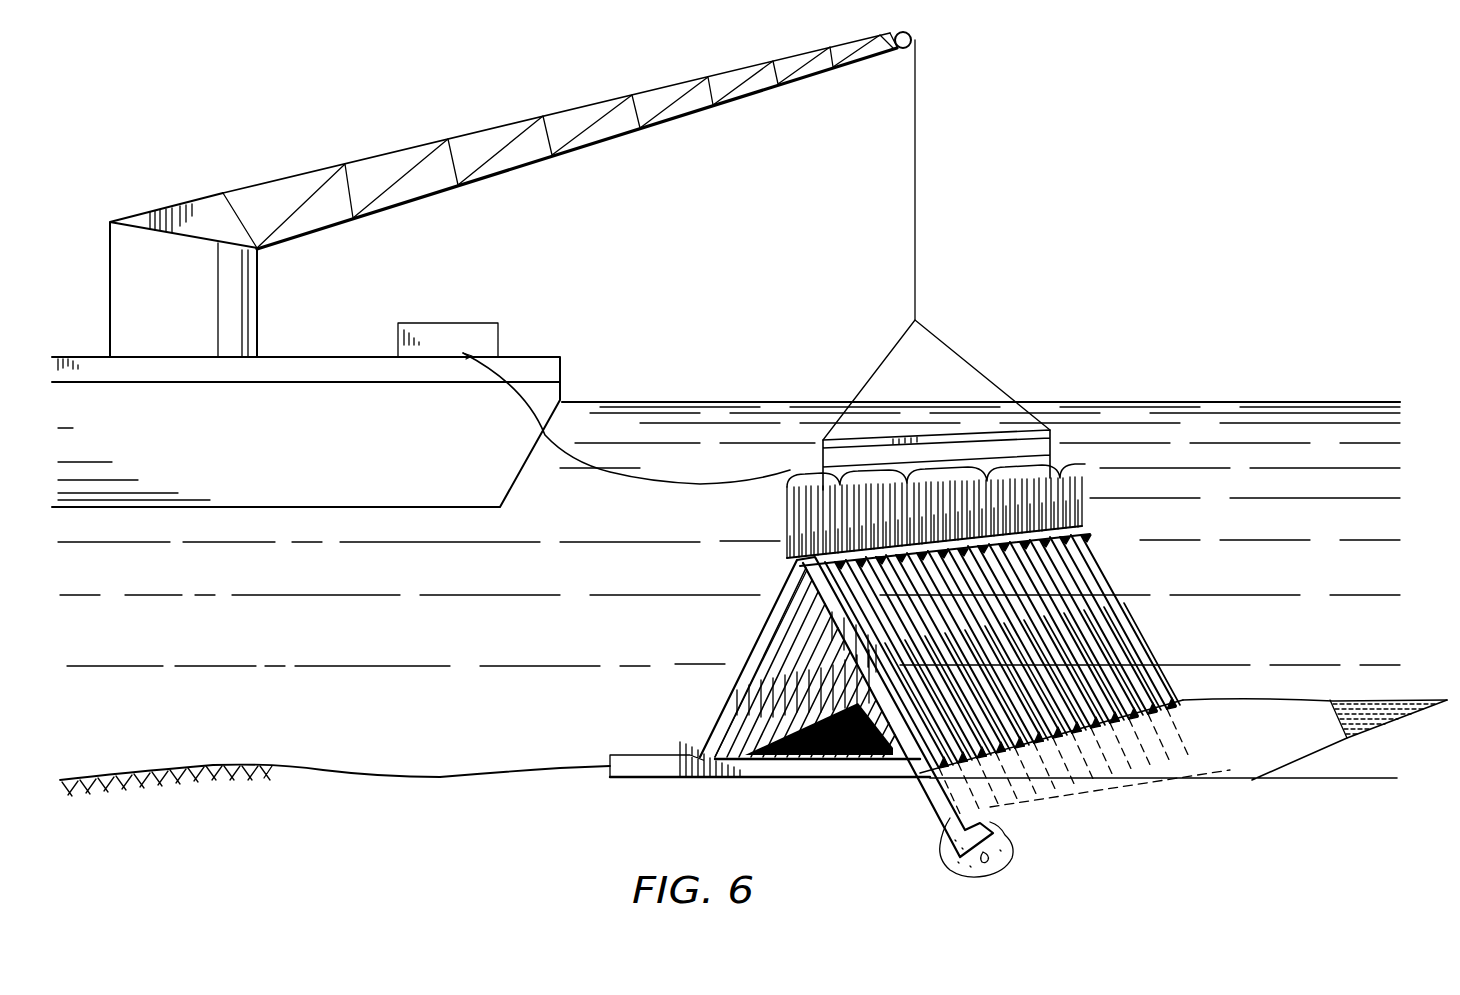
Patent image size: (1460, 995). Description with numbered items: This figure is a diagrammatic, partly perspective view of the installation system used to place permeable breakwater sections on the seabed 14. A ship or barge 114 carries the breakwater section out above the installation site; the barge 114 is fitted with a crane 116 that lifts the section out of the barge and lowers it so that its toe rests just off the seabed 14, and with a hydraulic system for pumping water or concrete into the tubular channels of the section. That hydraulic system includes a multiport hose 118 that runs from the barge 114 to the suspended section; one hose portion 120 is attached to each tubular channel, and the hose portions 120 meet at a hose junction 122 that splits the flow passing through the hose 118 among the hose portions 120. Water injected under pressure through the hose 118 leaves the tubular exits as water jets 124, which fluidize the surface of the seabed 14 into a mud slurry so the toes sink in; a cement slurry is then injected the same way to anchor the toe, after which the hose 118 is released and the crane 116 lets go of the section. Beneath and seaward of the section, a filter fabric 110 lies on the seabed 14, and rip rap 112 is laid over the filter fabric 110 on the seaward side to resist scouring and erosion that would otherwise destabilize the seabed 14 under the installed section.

The seabed 14 is at (463, 771).
The filter fabric 110 is at (1342, 743).
The rip rap 112 is at (1268, 718).
The barge 114 is at (328, 356).
The crane 116 is at (222, 192).
The multiport hose 118 is at (650, 478).
The hose portion 120 is at (1053, 477).
The hose junction 122 is at (943, 457).
The water jets 124 is at (997, 864).